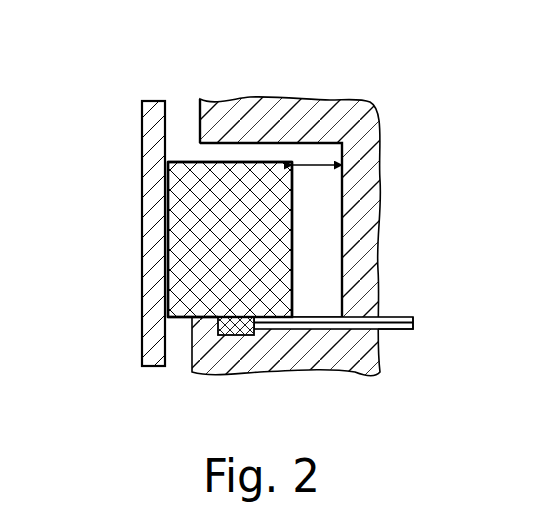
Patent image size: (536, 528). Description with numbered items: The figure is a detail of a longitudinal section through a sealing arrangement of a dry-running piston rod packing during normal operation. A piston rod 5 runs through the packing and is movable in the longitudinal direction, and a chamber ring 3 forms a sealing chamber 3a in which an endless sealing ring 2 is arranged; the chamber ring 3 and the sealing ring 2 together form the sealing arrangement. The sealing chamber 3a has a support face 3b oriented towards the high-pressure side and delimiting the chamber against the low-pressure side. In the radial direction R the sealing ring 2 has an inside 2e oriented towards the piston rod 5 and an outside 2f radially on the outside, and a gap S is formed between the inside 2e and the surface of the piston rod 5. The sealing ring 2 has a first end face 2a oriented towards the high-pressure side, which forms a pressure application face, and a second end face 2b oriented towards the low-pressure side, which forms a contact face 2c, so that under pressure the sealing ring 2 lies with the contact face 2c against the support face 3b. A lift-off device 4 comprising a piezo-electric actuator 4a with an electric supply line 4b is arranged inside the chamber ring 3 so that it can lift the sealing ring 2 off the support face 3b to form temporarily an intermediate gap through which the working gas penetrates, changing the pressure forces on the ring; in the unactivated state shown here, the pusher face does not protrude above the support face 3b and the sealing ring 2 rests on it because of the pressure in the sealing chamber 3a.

The sealing ring 2 is at (192, 238).
The first end face 2a is at (182, 152).
The second end face 2b is at (179, 328).
The contact face 2c is at (209, 328).
The inside 2e is at (159, 219).
The outside 2f is at (300, 179).
The chamber ring 3 is at (333, 130).
The sealing chamber 3a is at (320, 217).
The support face 3b is at (328, 311).
The lift-off device 4 is at (266, 369).
The actuator 4a is at (238, 334).
The electric supply line 4b is at (393, 333).
The piston rod 5 is at (157, 312).
The radial direction R is at (365, 150).
The gap S is at (168, 194).